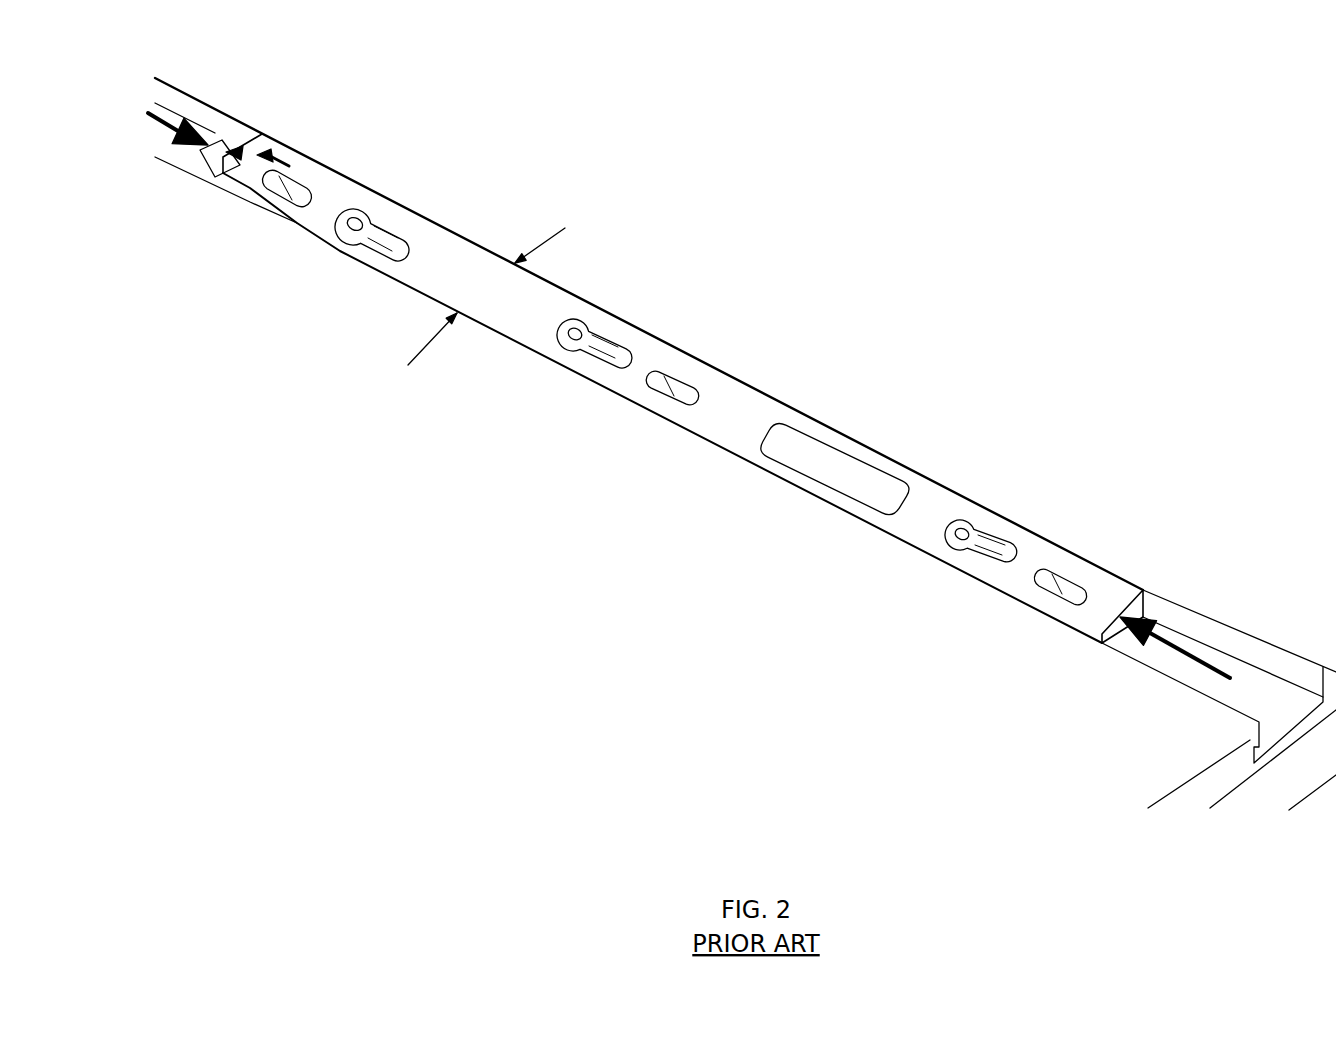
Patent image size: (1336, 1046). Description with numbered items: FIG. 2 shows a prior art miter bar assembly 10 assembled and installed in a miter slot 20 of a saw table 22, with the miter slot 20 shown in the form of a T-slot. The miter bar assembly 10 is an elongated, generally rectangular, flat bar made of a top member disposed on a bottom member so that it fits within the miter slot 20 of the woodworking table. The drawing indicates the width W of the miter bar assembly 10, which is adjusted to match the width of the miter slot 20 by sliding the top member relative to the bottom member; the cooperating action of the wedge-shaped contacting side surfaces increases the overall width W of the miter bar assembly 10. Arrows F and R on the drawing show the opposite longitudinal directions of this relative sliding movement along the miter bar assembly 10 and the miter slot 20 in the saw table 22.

The miter bar assembly 10 is at (725, 410).
The miter slot 20 is at (1250, 688).
The saw table 22 is at (1238, 760).
The feed direction arrow F is at (163, 110).
The return direction arrow R is at (1177, 653).
The width W is at (503, 286).